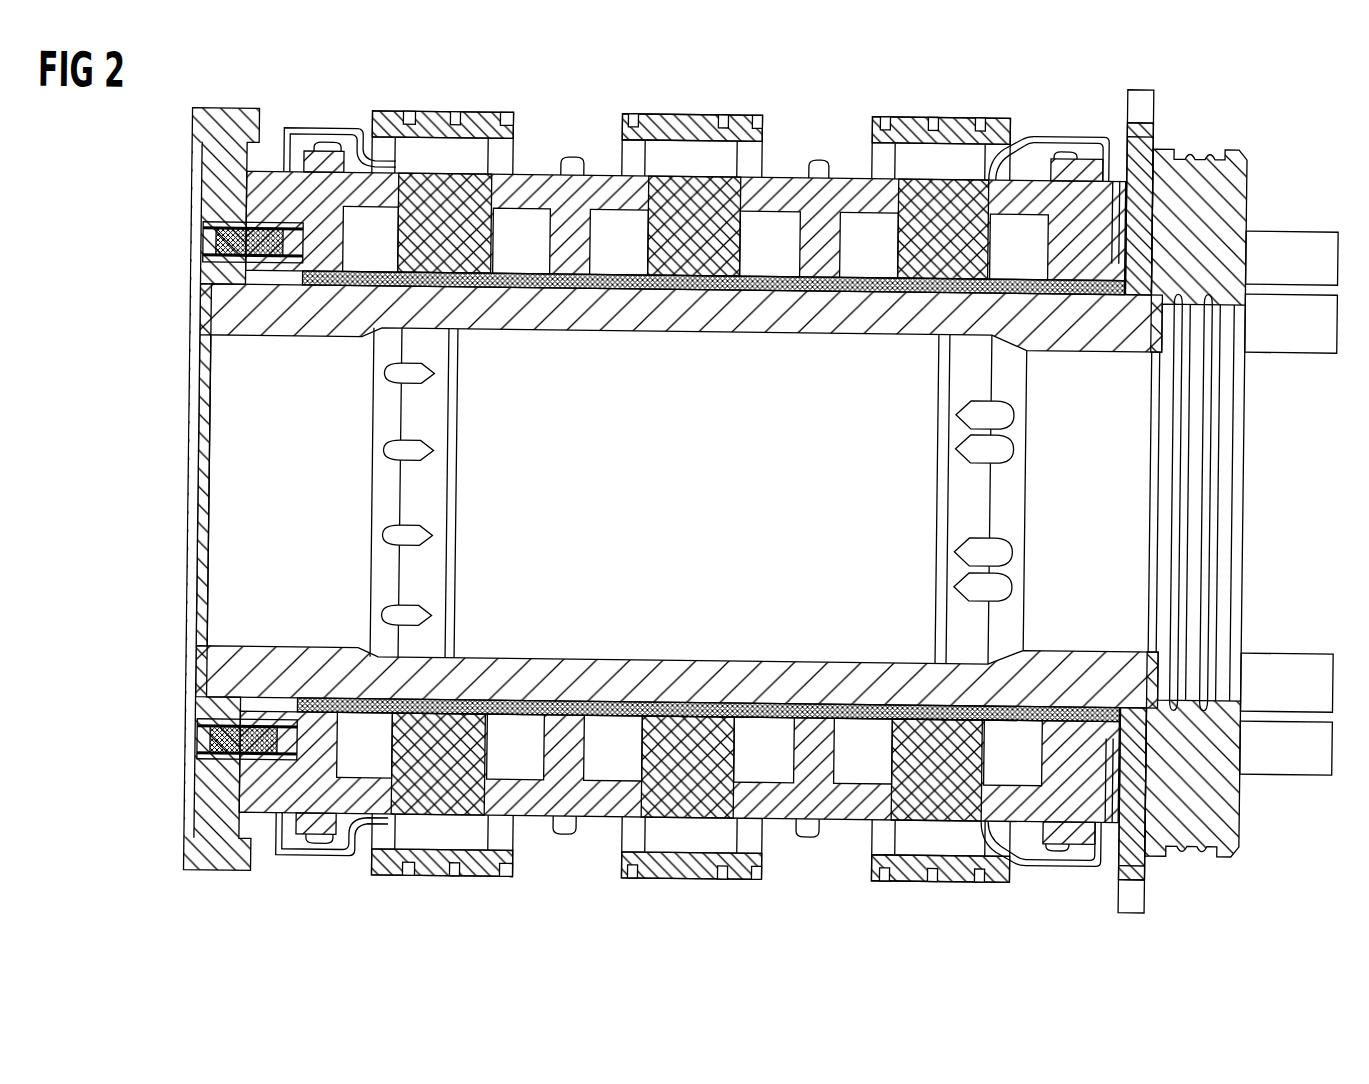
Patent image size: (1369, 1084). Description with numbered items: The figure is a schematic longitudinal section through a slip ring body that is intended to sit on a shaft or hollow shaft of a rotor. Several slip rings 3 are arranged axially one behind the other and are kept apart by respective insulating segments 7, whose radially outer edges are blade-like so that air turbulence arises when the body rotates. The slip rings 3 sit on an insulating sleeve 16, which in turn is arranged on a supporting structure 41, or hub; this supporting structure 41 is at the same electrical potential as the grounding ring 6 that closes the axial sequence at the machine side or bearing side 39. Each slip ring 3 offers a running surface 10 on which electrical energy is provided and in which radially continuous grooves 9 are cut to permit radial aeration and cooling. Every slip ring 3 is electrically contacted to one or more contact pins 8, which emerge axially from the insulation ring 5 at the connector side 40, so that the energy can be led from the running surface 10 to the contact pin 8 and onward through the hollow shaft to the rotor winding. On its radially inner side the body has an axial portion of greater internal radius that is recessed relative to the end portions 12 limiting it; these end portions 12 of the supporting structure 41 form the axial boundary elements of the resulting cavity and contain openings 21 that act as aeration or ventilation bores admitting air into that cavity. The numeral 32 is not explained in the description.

The slip ring 3 is at (426, 109).
The running surface 10 is at (478, 109).
The housing projection 32 is at (779, 226).
The insulation ring 5 is at (1188, 138).
The contact pin 8 is at (1289, 228).
The end portion 12 is at (294, 335).
The supporting structure 41 is at (638, 302).
The insulating sleeve 16 is at (765, 284).
The opening 21 is at (1013, 402).
The machine side 39 is at (155, 508).
The connector side 40 is at (1368, 514).
The grounding ring 6 is at (228, 860).
The groove 9 is at (412, 873).
The insulating segment 7 is at (787, 812).